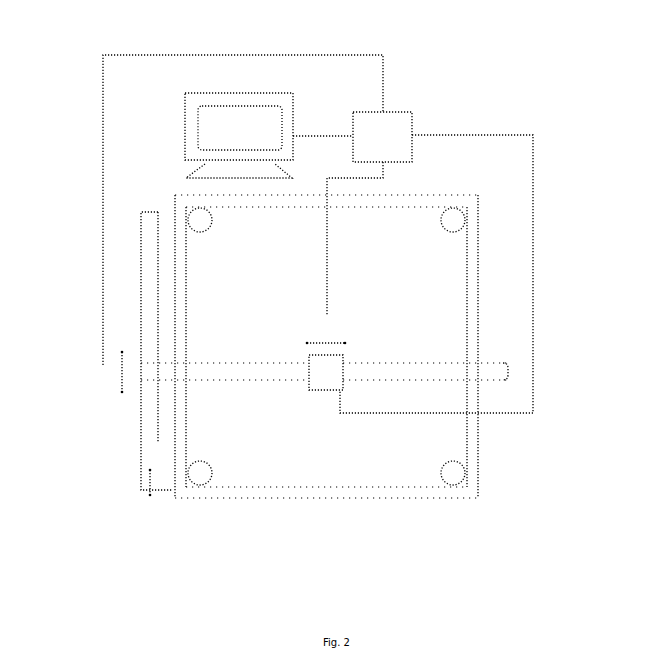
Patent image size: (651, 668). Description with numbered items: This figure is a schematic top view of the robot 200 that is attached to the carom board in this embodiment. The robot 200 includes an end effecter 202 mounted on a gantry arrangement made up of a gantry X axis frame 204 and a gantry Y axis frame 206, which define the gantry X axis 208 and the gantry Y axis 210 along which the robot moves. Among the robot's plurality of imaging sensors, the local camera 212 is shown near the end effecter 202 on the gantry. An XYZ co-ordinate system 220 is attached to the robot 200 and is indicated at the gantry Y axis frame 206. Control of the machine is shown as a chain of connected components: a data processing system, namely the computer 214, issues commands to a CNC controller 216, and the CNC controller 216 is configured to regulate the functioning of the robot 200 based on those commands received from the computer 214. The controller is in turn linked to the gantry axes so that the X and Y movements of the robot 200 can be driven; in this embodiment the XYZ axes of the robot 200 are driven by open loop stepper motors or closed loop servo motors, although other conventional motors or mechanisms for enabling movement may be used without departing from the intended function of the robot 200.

The robot 200 is at (483, 535).
The end effecter 202 is at (345, 400).
The gantry X axis frame 204 is at (497, 360).
The gantry Y axis frame 206 is at (138, 488).
The gantry X axis 208 is at (340, 325).
The gantry Y axis 210 is at (93, 395).
The local camera 212 is at (305, 400).
The data processing system (computer) 214 is at (182, 108).
The CNC controller 216 is at (401, 106).
The XYZ co-ordinate system 220 is at (152, 498).